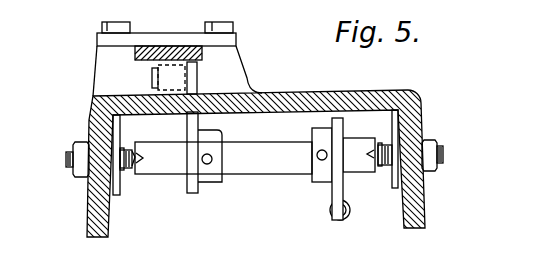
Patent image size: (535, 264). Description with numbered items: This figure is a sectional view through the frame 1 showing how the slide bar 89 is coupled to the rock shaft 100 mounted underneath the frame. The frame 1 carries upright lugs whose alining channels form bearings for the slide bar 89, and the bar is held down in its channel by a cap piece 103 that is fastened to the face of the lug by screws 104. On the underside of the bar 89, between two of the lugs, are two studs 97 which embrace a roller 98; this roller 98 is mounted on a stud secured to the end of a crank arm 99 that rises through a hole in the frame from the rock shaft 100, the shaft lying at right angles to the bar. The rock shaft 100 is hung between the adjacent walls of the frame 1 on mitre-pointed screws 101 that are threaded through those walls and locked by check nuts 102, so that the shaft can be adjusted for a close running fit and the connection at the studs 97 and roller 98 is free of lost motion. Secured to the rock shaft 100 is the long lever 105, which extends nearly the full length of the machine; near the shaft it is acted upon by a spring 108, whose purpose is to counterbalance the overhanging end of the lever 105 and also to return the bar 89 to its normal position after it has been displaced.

The frame 1 is at (326, 93).
The slide bar 89 is at (135, 53).
The studs 97 is at (150, 68).
The roller 98 is at (148, 79).
The crank arm 99 is at (197, 77).
The rock shaft 100 is at (255, 152).
The mitre-pointed screws 101 is at (67, 172).
The check nuts 102 is at (75, 143).
The cap pieces 103 is at (97, 40).
The screws 104 is at (101, 29).
The long lever 105 is at (333, 194).
The spring 108 is at (330, 211).